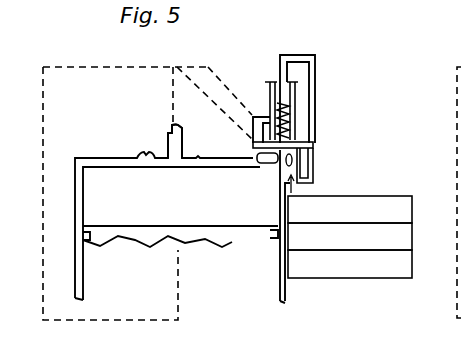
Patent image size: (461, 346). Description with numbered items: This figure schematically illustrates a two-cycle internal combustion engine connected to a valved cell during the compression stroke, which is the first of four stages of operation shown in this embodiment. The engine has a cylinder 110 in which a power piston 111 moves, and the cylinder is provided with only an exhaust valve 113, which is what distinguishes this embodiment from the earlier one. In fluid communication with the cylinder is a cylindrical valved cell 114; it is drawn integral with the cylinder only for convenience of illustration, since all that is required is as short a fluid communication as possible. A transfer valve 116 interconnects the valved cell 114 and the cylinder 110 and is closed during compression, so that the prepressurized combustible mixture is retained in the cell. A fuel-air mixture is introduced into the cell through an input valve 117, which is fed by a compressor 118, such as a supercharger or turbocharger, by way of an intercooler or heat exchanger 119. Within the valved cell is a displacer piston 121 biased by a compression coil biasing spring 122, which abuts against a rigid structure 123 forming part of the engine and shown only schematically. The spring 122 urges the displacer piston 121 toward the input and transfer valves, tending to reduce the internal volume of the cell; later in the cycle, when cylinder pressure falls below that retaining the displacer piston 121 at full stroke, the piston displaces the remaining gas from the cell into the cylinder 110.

The cylinder 110 is at (75, 206).
The power piston 111 is at (232, 243).
The exhaust valve 113 is at (169, 133).
The valved cell 114 is at (316, 117).
The transfer valve 116 is at (270, 166).
The input valve 117 is at (308, 162).
The compressor 118 is at (412, 206).
The heat exchanger 119 is at (412, 245).
The displacer piston 121 is at (305, 147).
The biasing spring 122 is at (290, 108).
The rigid structure 123 is at (278, 70).